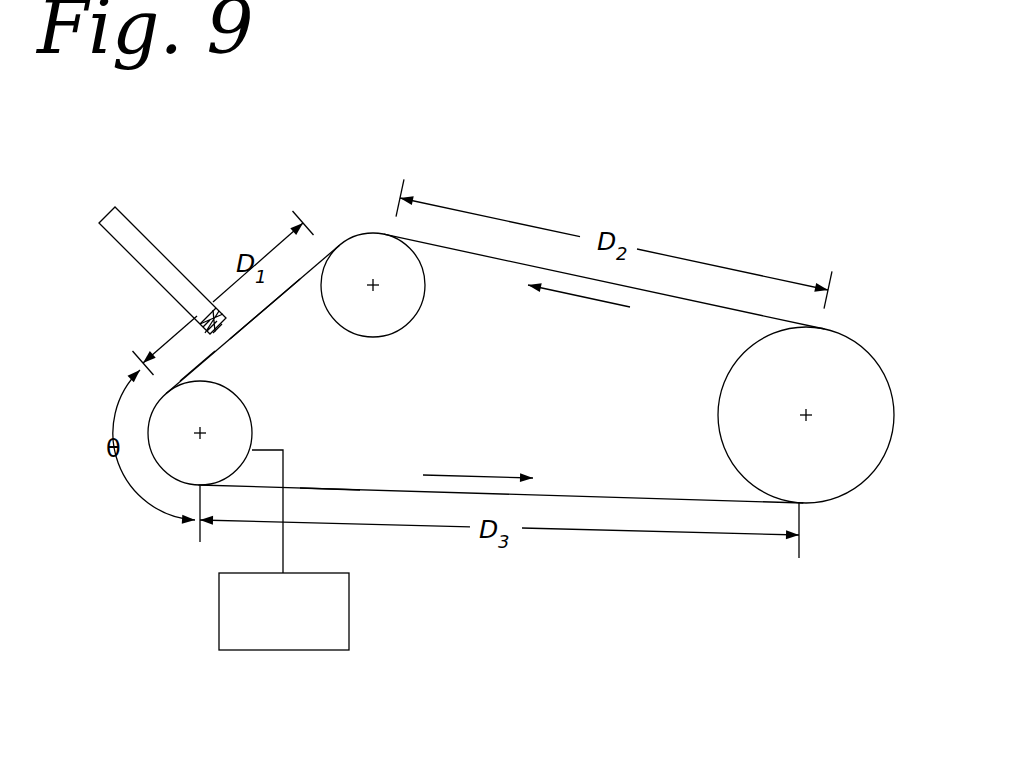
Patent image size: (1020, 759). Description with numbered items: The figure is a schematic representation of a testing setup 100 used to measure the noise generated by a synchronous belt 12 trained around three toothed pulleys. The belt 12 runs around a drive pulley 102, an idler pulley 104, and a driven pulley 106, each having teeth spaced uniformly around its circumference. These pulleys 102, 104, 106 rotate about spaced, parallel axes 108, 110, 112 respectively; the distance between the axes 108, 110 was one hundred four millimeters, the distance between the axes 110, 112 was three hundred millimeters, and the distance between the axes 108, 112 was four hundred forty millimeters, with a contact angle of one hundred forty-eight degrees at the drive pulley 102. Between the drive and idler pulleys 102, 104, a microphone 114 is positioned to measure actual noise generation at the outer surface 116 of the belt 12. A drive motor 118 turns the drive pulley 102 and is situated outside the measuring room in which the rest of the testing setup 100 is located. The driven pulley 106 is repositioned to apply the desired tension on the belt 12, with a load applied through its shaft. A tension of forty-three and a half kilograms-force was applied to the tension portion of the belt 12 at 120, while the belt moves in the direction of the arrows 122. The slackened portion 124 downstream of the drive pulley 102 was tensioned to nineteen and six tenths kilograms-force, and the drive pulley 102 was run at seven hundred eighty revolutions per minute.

The testing setup 100 is at (672, 237).
The synchronous belt 12 is at (727, 307).
The drive pulley 102 is at (247, 408).
The idler pulley 104 is at (413, 300).
The driven pulley 106 is at (740, 477).
The axis 108 is at (200, 433).
The axis 110 is at (373, 285).
The axis 112 is at (806, 415).
The microphone 114 is at (152, 244).
The outer surface 116 is at (295, 283).
The drive motor 118 is at (268, 641).
The tension portion 120 is at (197, 366).
The arrows 122 is at (570, 296).
The slackened portion 124 is at (328, 487).